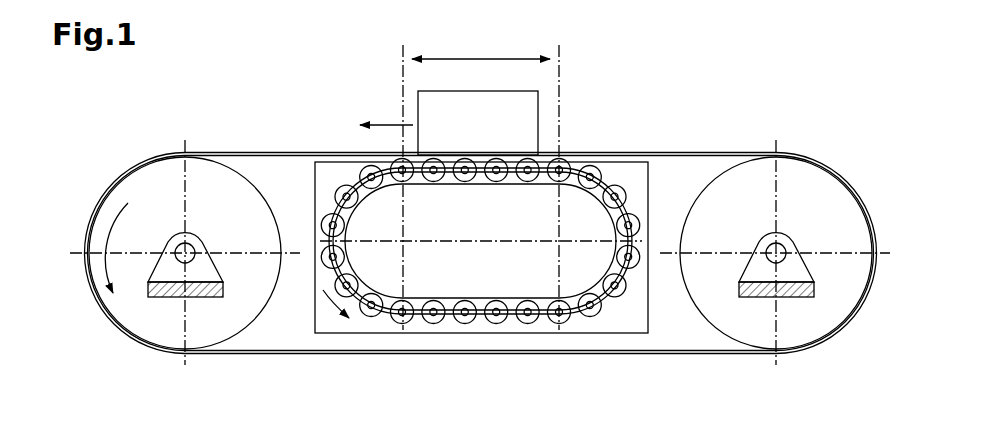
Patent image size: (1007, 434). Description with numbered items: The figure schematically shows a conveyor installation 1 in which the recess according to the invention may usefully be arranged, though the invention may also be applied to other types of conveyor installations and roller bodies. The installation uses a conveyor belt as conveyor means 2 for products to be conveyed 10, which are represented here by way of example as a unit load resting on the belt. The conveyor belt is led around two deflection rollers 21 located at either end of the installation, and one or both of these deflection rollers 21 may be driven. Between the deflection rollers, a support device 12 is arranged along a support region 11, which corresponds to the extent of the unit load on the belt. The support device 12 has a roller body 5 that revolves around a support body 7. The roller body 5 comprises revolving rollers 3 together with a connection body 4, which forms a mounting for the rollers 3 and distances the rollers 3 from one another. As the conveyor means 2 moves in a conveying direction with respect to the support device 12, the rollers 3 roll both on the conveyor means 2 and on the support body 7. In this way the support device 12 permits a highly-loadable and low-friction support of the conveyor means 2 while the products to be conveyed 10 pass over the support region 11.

The conveyor installation 1 is at (268, 99).
The conveyor means 2 is at (712, 155).
The rollers 3 is at (558, 317).
The connection body 4 is at (448, 313).
The roller body 5 is at (636, 174).
The support body 7 is at (487, 222).
The products to be conveyed 10 is at (528, 118).
The support region 11 is at (458, 59).
The support device 12 is at (298, 176).
The deflection rollers 21 is at (152, 333).